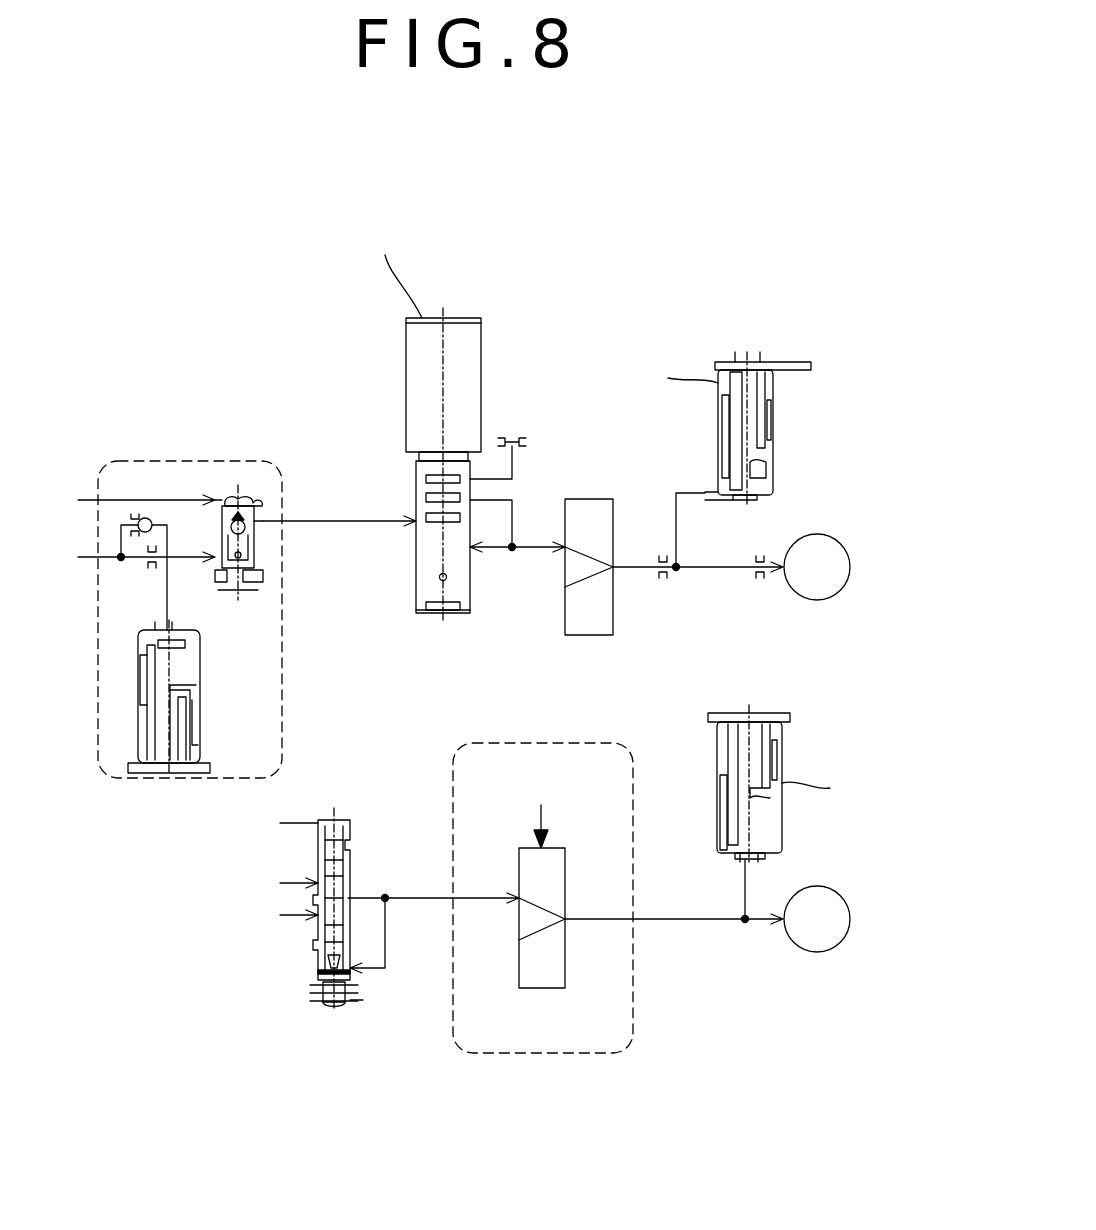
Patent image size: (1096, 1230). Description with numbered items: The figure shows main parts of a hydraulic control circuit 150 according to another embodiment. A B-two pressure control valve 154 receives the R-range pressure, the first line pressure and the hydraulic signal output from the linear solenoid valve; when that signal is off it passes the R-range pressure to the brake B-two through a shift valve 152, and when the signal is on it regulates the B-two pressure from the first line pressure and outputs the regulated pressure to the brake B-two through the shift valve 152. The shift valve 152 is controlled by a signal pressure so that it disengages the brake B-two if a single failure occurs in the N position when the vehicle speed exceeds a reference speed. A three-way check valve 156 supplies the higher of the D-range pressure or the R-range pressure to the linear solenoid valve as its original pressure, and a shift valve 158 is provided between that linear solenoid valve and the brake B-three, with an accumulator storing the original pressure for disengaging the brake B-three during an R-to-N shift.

The hydraulic control circuit 150 is at (782, 268).
The shift valve 152 is at (557, 877).
The B2 pressure control valve 154 is at (345, 800).
The three-way check valve 156 is at (260, 495).
The shift valve 158 is at (593, 507).